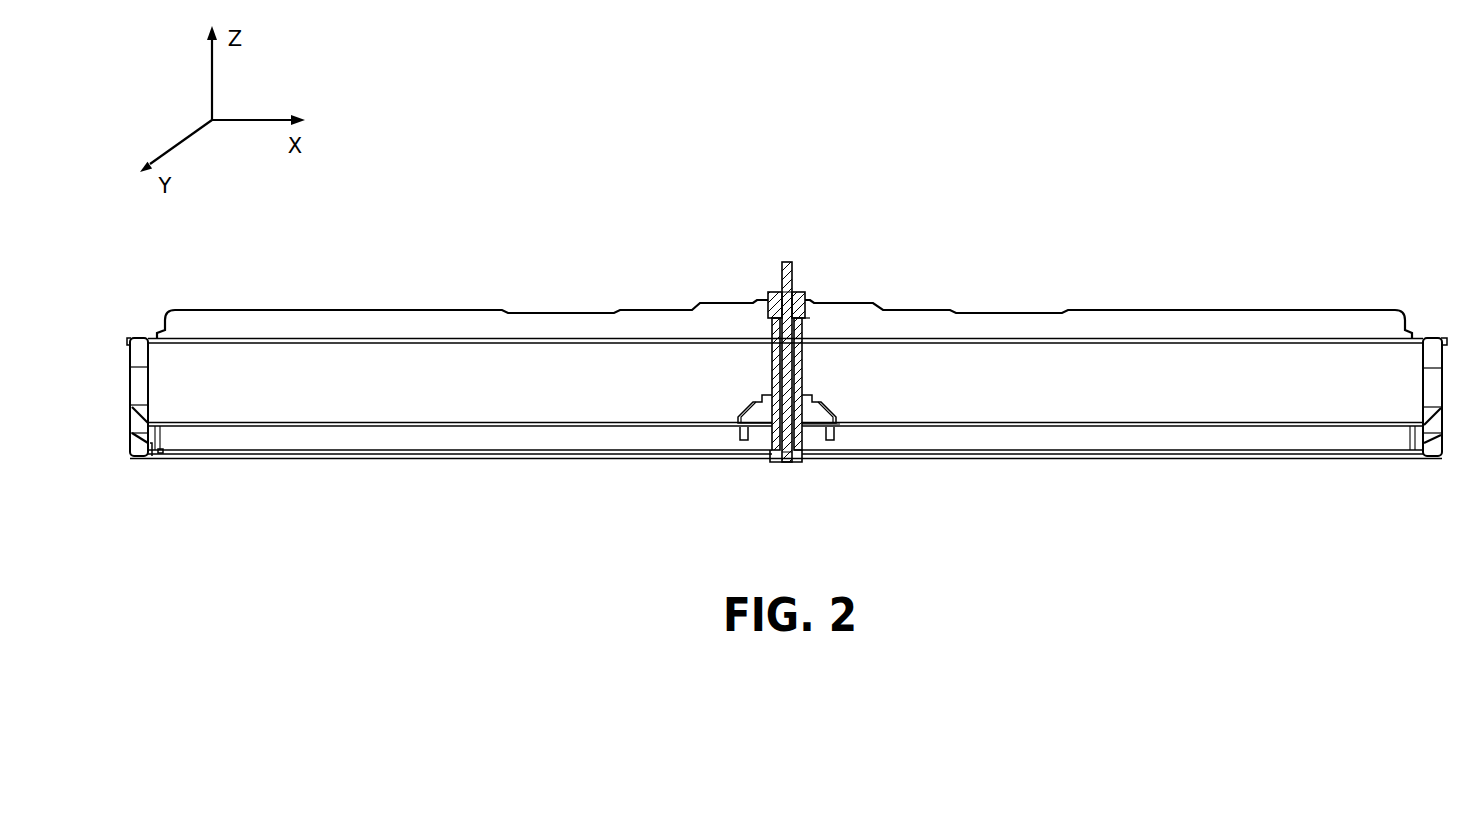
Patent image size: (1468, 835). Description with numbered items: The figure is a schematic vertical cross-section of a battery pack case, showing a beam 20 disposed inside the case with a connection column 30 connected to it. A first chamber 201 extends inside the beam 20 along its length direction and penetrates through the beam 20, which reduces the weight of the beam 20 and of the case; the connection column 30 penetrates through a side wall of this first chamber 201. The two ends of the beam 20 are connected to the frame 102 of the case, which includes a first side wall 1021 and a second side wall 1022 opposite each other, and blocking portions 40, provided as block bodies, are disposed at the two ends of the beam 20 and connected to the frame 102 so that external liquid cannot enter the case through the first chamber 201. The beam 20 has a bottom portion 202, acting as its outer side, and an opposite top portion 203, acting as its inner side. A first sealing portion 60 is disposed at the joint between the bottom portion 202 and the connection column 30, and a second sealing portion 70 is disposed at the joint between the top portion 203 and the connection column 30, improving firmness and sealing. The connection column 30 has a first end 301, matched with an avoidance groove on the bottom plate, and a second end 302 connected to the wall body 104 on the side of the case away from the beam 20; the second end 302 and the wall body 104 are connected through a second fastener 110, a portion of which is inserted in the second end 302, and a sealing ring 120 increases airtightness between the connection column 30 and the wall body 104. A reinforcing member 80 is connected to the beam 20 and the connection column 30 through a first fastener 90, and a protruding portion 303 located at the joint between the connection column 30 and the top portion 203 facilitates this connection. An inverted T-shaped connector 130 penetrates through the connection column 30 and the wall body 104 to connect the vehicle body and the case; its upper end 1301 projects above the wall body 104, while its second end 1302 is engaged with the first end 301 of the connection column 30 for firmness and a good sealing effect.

The beam 20 is at (1353, 427).
The connection column 30 is at (802, 360).
The blocking portions 40 is at (158, 455).
The first sealing portion 60 is at (768, 458).
The second sealing portion 70 is at (810, 423).
The reinforcing member 80 is at (743, 405).
The first fastener 90 is at (803, 395).
The frame 102 is at (1442, 435).
The wall body 104 is at (713, 303).
The second fastener 110 is at (772, 292).
The sealing ring 120 is at (803, 303).
The inverted T-shaped connector 130 is at (789, 260).
The first chamber 201 is at (230, 453).
The bottom portion of the beam 202 is at (352, 460).
The top portion of the beam 203 is at (425, 423).
The first end of the connection column 301 is at (798, 462).
The second end of the connection column 302 is at (817, 305).
The protruding portion 303 is at (747, 430).
The first side wall 1021 is at (130, 360).
The second side wall 1022 is at (1438, 338).
The bolt head end 1301 is at (783, 300).
The second end of the inverted T-shaped connector 1302 is at (785, 455).